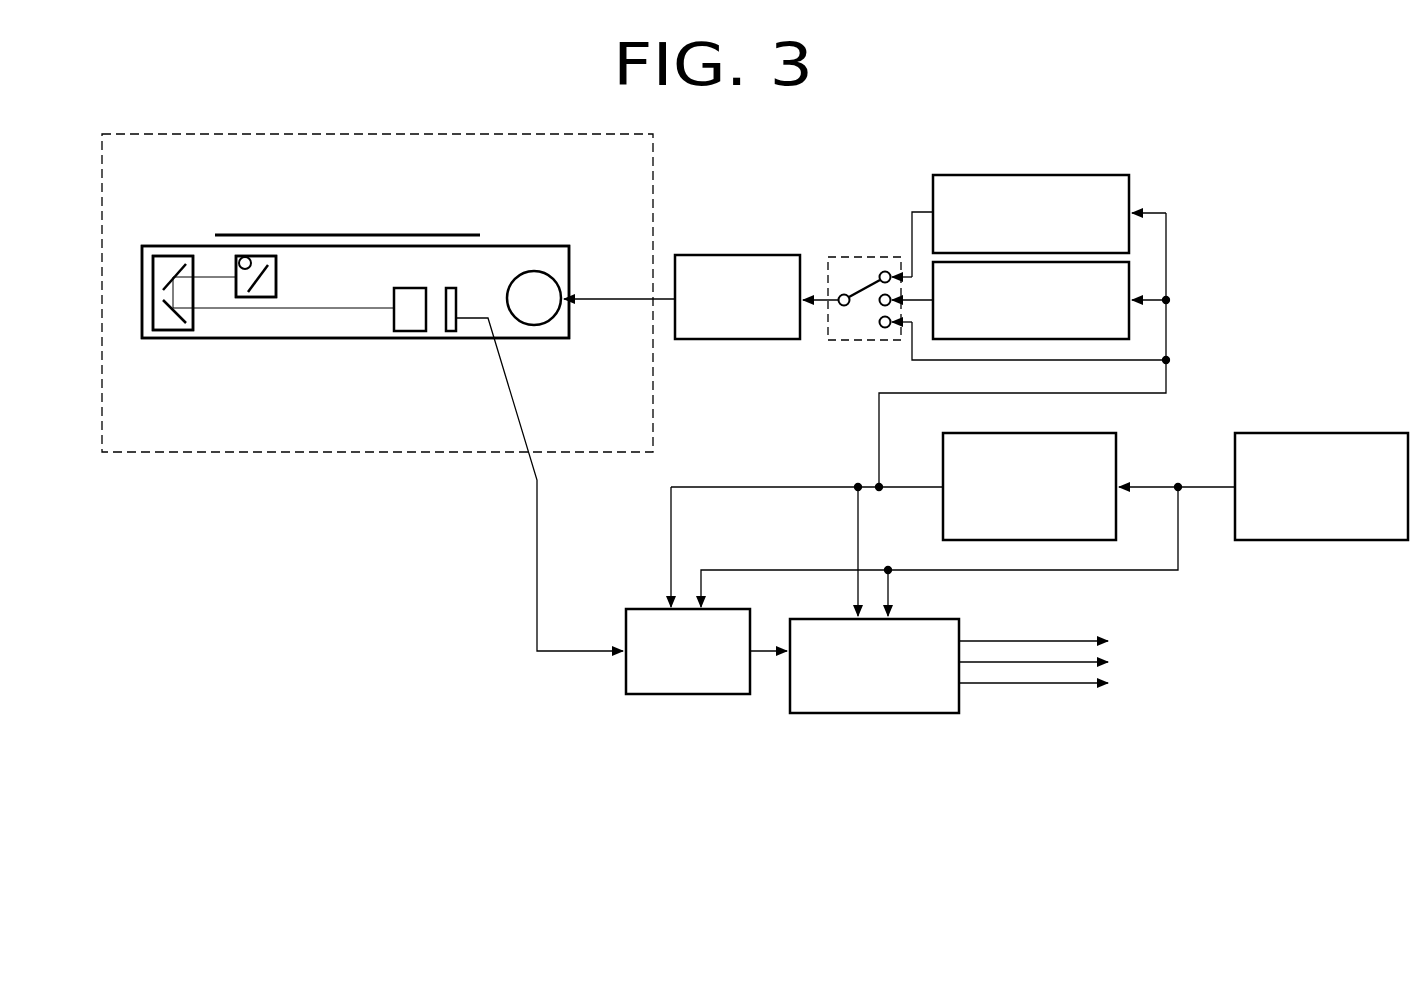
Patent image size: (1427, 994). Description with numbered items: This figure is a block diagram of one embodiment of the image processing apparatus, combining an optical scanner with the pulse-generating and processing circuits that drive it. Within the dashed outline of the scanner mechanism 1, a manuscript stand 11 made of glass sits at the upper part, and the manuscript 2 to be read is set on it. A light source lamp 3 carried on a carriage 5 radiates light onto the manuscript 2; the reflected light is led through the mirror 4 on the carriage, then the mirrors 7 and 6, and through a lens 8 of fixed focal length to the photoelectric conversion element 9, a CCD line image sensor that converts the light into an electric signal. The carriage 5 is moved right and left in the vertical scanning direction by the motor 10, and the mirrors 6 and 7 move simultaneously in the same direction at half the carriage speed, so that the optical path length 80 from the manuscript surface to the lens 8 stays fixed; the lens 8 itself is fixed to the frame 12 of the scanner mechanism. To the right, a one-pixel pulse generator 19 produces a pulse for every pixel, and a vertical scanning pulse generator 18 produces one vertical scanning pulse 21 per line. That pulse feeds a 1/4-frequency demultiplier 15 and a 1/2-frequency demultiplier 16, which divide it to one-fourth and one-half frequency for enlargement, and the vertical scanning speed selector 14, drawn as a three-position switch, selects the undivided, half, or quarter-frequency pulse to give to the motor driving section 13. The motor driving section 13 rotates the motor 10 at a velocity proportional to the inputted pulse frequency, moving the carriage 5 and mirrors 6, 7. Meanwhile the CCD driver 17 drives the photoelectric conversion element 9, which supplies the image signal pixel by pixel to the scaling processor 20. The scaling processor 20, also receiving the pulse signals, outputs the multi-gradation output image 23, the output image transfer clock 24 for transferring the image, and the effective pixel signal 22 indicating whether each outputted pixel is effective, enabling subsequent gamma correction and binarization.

The scanner mechanism 1 is at (653, 155).
The manuscript 2 is at (345, 235).
The light source lamp 3 is at (245, 257).
The mirror 4 is at (276, 280).
The carriage 5 is at (262, 293).
The mirror 6 is at (160, 330).
The mirror 7 is at (172, 258).
The optical path length 80 is at (215, 310).
The lens 8 is at (406, 331).
The photoelectric conversion element 9 is at (450, 331).
The motor 10 is at (535, 325).
The manuscript stand 11 is at (537, 246).
The frame 12 is at (569, 278).
The motor driving section 13 is at (740, 255).
The vertical scanning speed selector 14 is at (865, 257).
The 1/4-frequency demultiplier 15 is at (1003, 175).
The 1/2-frequency demultiplier 16 is at (1129, 275).
The CCD driver 17 is at (690, 694).
The vertical scanning pulse generator 18 is at (1116, 452).
The one-pixel pulse generator 19 is at (1323, 433).
The scaling processor 20 is at (877, 713).
The vertical scanning pulse 21 is at (1166, 380).
The effective pixel signal 22 is at (1028, 641).
The output image 23 is at (1062, 662).
The output image transfer clock 24 is at (988, 683).